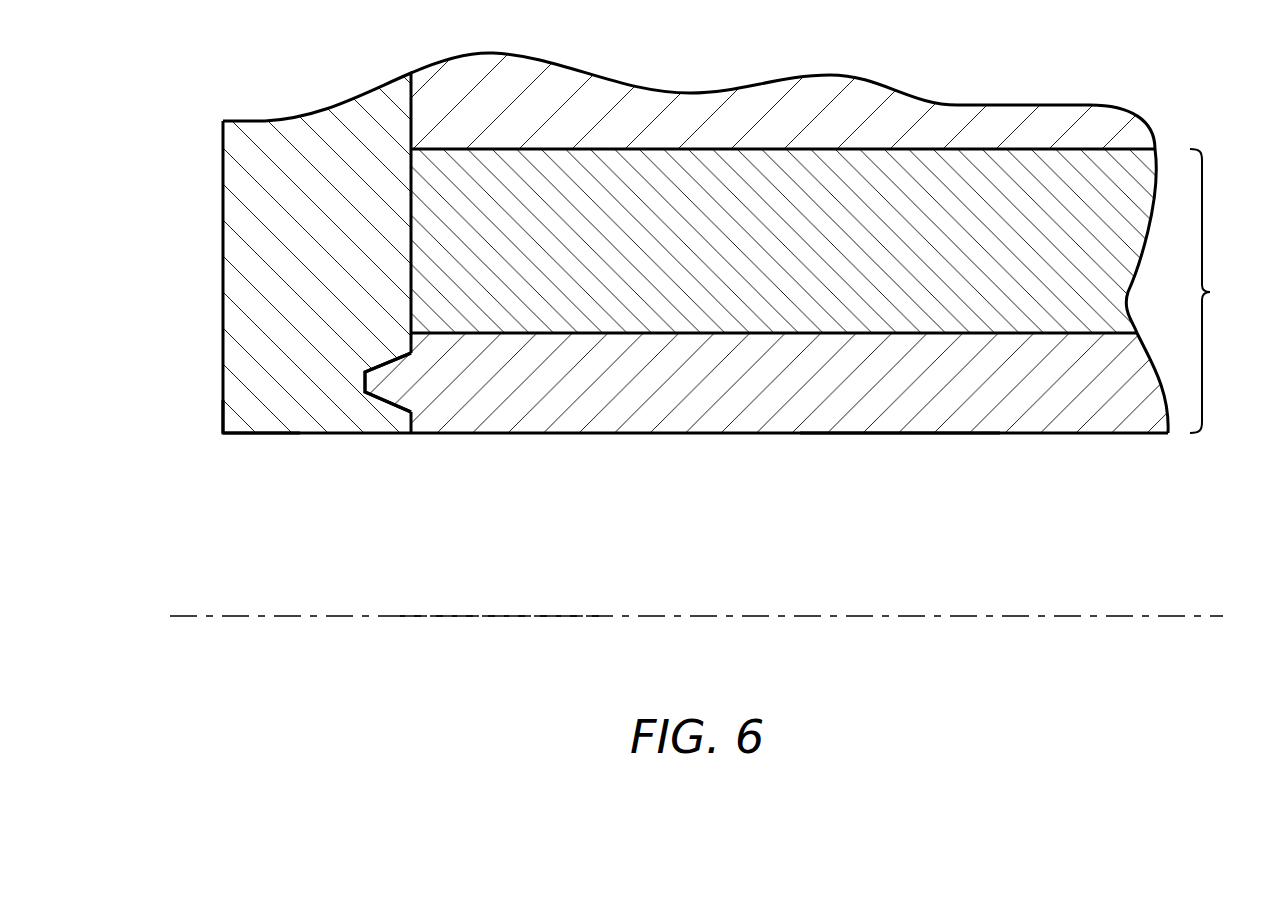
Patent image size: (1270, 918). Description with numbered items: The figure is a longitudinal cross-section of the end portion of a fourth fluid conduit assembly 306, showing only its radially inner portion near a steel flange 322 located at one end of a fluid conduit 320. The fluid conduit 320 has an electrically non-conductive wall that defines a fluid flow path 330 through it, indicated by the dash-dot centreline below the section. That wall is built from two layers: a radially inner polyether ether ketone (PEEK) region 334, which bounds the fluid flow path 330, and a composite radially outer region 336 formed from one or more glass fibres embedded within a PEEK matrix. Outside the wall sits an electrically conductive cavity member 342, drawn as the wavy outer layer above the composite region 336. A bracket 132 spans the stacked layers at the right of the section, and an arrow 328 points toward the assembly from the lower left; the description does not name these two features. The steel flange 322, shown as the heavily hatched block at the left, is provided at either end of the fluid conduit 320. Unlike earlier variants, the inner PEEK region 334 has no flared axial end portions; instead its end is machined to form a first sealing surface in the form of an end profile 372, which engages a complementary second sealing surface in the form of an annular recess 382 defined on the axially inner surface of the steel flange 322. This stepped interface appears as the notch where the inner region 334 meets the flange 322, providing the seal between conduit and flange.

The abradable liner assembly 132 is at (1223, 291).
The steel flange 322 is at (246, 197).
The electrically conductive cavity member 342 is at (693, 112).
The composite radially outer region 336 is at (945, 192).
The radially inner polyether ether ketone (PEEK) region 334 is at (935, 403).
The end profile 372 is at (382, 388).
The annular recess 382 is at (388, 382).
The fluid flow path 330 is at (719, 674).
The fourth fluid conduit assembly 306 is at (486, 650).
The fluid conduit 320 is at (877, 576).
The liner attachment region 328 is at (232, 535).